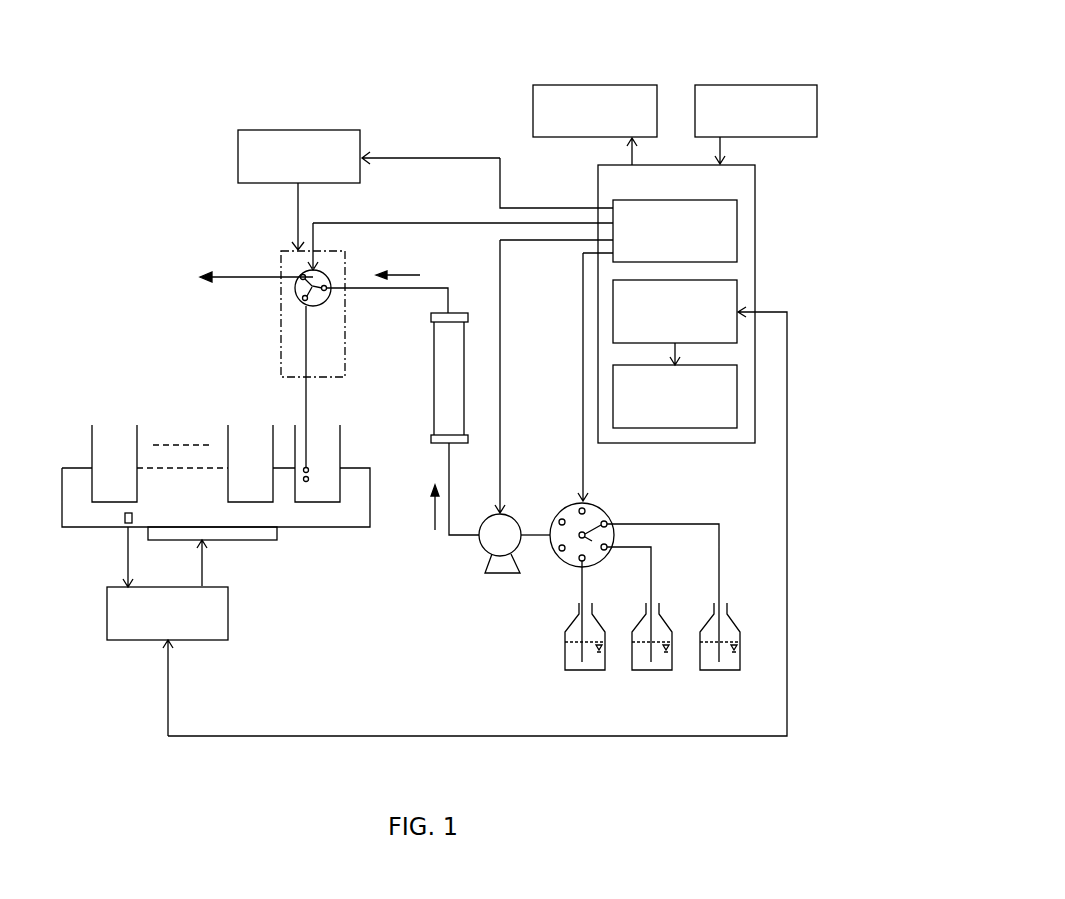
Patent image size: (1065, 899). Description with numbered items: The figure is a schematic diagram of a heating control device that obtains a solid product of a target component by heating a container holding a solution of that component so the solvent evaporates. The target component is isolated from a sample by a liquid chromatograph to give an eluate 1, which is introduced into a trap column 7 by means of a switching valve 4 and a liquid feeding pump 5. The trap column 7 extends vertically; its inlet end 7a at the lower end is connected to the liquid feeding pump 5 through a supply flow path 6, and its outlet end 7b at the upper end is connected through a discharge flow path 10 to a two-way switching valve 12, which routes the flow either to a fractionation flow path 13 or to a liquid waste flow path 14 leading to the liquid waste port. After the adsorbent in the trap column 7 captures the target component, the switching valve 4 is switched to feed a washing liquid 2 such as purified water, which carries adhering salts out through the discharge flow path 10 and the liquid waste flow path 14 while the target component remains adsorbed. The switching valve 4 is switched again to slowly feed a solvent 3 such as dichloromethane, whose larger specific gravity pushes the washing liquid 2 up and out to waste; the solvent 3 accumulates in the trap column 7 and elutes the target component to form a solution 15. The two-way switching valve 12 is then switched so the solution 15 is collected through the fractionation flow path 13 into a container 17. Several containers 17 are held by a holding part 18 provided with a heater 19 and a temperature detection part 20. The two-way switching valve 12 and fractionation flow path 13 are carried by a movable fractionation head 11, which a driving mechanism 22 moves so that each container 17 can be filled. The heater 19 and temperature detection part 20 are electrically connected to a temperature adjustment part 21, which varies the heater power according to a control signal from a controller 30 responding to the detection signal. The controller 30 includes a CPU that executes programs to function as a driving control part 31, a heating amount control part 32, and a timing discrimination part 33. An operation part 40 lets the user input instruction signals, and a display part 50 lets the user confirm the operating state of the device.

The eluate 1 is at (583, 672).
The washing liquid 2 is at (650, 672).
The solvent 3 is at (718, 672).
The switching valve 4 is at (607, 510).
The liquid feeding pump 5 is at (500, 575).
The supply flow path 6 is at (462, 537).
The trap column 7 is at (421, 381).
The inlet end 7a is at (431, 440).
The outlet end 7b is at (431, 317).
The discharge flow path 10 is at (436, 287).
The fractionation head 11 is at (281, 322).
The two-way switching valve 12 is at (326, 302).
The fractionation flow path 13 is at (306, 398).
The liquid waste flow path 14 is at (253, 276).
The solution containing the target component 15 is at (312, 468).
The container 17 is at (318, 503).
The holding part 18 is at (234, 524).
The heater 19 is at (262, 540).
The temperature detection part 20 is at (124, 516).
The temperature adjustment part 21 is at (228, 622).
The driving mechanism 22 is at (290, 130).
The controller 30 is at (707, 315).
The driving control part 31 is at (737, 235).
The heating amount control part 32 is at (740, 295).
The timing discrimination part 33 is at (707, 428).
The operation part 40 is at (762, 85).
The display part 50 is at (605, 85).